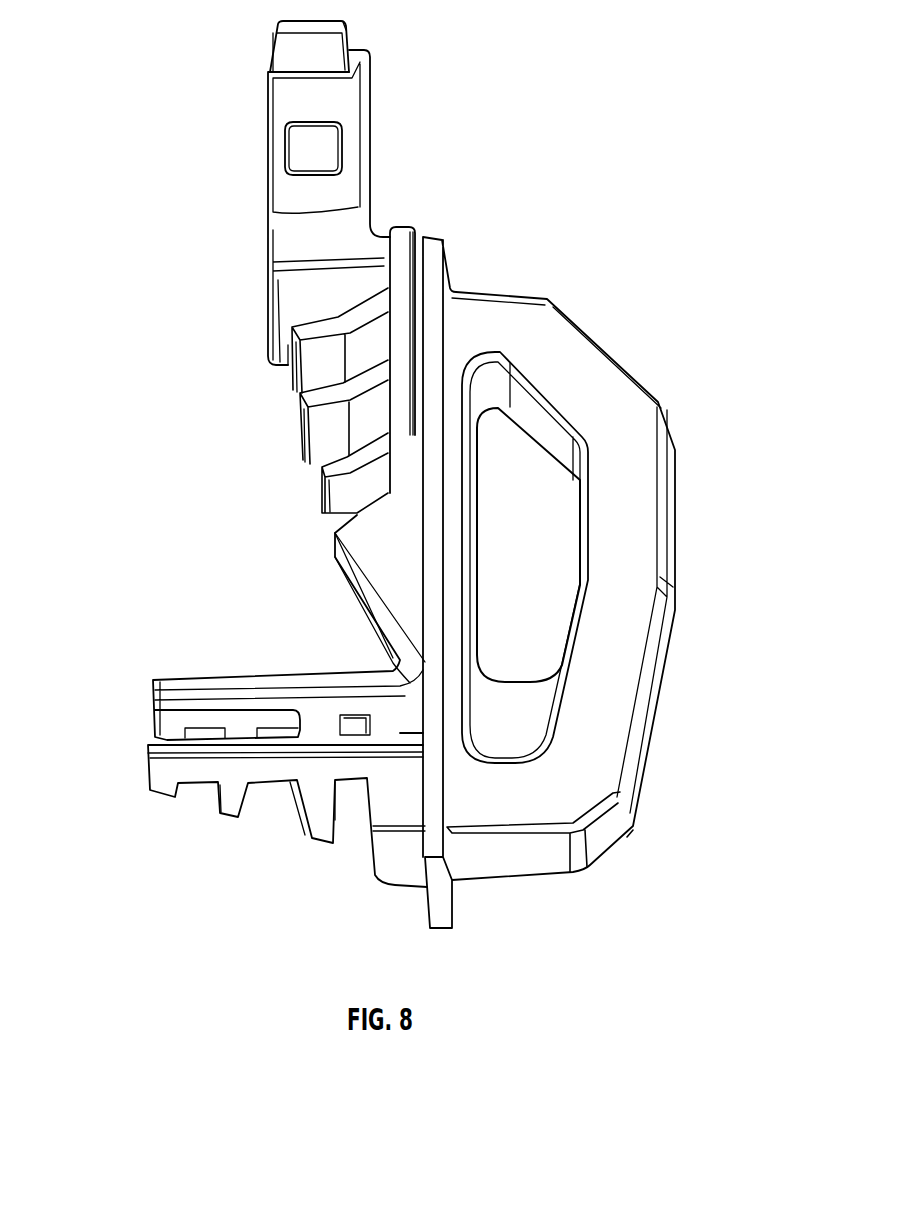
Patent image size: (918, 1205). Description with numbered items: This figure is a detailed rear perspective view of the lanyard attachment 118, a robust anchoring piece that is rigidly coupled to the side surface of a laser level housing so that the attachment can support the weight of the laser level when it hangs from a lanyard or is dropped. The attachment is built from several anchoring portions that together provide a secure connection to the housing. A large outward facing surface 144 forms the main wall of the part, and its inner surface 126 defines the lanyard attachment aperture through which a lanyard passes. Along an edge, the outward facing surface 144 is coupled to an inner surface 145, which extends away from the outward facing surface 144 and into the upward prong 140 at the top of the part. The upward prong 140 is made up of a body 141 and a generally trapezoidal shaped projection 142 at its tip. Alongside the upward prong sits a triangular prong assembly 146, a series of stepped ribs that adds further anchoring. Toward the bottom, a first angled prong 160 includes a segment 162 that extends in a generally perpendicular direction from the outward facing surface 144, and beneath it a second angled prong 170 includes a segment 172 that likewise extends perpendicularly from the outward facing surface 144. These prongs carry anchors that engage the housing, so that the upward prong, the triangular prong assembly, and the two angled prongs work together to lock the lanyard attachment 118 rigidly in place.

The lanyard attachment 118 is at (176, 100).
The inner surface 126 is at (530, 420).
The upward prong 140 is at (415, 124).
The body 141 is at (360, 100).
The generally trapezoidal shaped projection 142 is at (342, 40).
The outward facing surface 144 is at (448, 273).
The inner surface 145 is at (410, 254).
The triangular prong assembly 146 is at (238, 447).
The first angled prong 160 is at (256, 655).
The segment 162 is at (213, 683).
The second angled prong 170 is at (268, 848).
The segment 172 is at (205, 762).